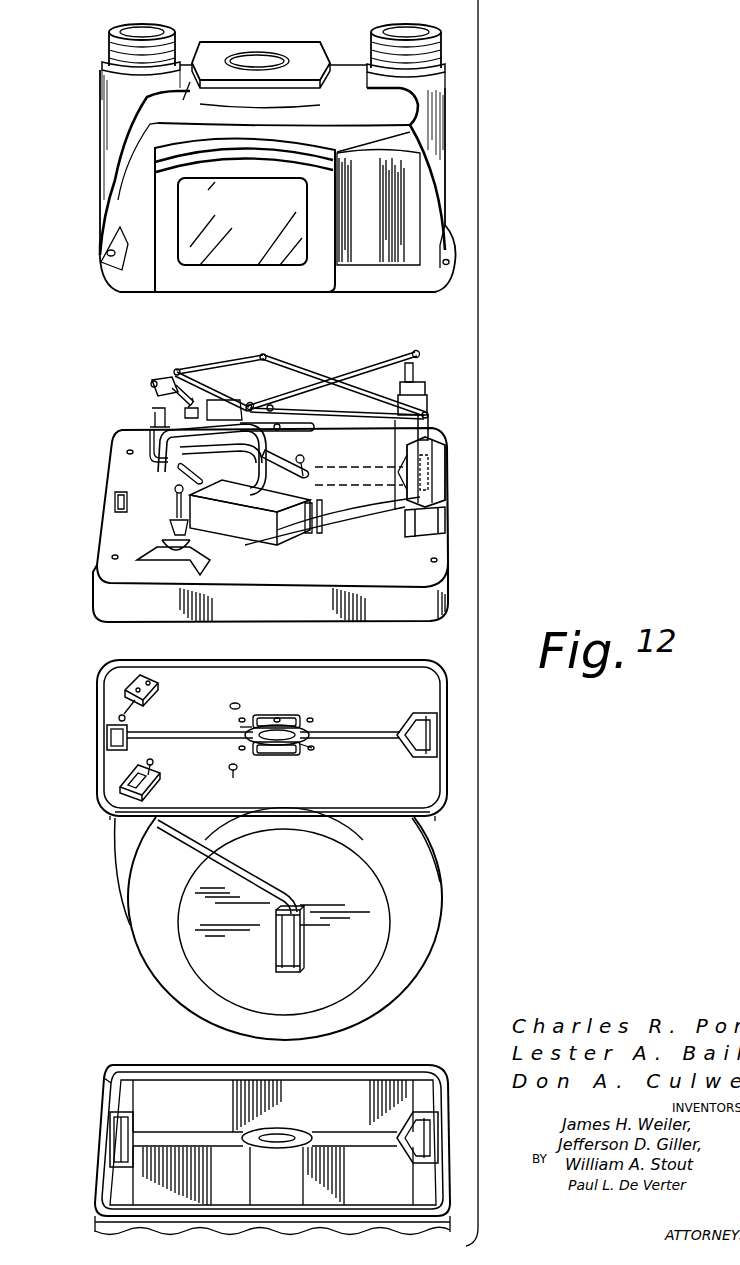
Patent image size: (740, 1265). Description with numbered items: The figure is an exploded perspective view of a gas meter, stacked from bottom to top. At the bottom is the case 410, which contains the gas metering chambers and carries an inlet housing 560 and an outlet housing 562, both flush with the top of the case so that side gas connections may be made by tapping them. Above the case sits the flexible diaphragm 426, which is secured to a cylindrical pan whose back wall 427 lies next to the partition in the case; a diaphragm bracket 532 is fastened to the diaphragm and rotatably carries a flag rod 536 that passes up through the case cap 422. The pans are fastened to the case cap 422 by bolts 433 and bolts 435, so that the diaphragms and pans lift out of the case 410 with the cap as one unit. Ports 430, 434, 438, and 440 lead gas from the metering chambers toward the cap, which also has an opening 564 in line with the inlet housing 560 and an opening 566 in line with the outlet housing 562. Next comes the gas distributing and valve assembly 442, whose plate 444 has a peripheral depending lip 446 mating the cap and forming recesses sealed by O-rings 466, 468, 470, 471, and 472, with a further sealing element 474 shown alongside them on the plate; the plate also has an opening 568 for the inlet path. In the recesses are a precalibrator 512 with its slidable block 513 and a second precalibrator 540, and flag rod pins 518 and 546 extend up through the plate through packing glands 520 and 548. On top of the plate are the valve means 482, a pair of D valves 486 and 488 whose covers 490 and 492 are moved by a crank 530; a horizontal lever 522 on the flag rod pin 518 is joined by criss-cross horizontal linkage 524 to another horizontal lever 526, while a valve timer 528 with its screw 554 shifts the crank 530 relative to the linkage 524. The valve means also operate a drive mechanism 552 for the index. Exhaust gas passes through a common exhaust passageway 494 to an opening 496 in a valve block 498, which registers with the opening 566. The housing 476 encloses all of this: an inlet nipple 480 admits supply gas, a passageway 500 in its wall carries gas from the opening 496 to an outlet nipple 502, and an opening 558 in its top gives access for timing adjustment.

The case 410 is at (96, 1215).
The case cap 422 is at (447, 822).
The flexible diaphragm 426 is at (165, 975).
The back wall 427 is at (125, 858).
The port 430 is at (233, 774).
The bolts 433 is at (240, 750).
The port 434 is at (232, 704).
The bolts 435 is at (243, 718).
The port 438 is at (277, 755).
The port 440 is at (280, 718).
The gas distributing and valve assembly 442 is at (447, 533).
The plate 444 is at (110, 527).
The peripheral depending lip 446 is at (447, 590).
The O-ring 466 is at (450, 790).
The O-ring 468 is at (383, 737).
The O-ring 470 is at (262, 755).
The O-ring 471 is at (110, 1078).
The O-ring 472 is at (240, 727).
The slot 474 is at (310, 745).
The housing 476 is at (383, 295).
The externally threaded nipple 480 is at (130, 22).
The valve means 482 is at (292, 450).
The D valve 486 is at (160, 428).
The D valve 488 is at (200, 545).
The cover 490 is at (215, 452).
The cover 492 is at (240, 540).
The common exhaust passageway 494 is at (372, 482).
The opening 496 is at (428, 462).
The valve block 498 is at (394, 510).
The passageway 500 is at (450, 135).
The externally threaded nipple 502 is at (390, 22).
The precalibrator 512 is at (120, 770).
The slidable block 513 is at (120, 790).
The flag rod pin 518 is at (430, 425).
The packing gland 520 is at (445, 475).
The horizontal lever 522 is at (350, 402).
The criss-cross horizontal linkage 524 is at (262, 356).
The horizontal lever 526 is at (358, 360).
The valve timer 528 is at (160, 377).
The crank 530 is at (157, 402).
The diaphragm bracket 532 is at (300, 968).
The flag rod 536 is at (263, 895).
The precalibrator 540 is at (158, 683).
The flag rod pin 546 is at (413, 360).
The packing gland 548 is at (428, 388).
The drive mechanism 552 is at (178, 512).
The screw 554 is at (154, 381).
The opening 558 is at (248, 55).
The inlet housing 560 is at (138, 1112).
The outlet housing 562 is at (400, 1165).
The opening 564 is at (107, 735).
The opening 566 is at (437, 740).
The opening 568 is at (115, 497).